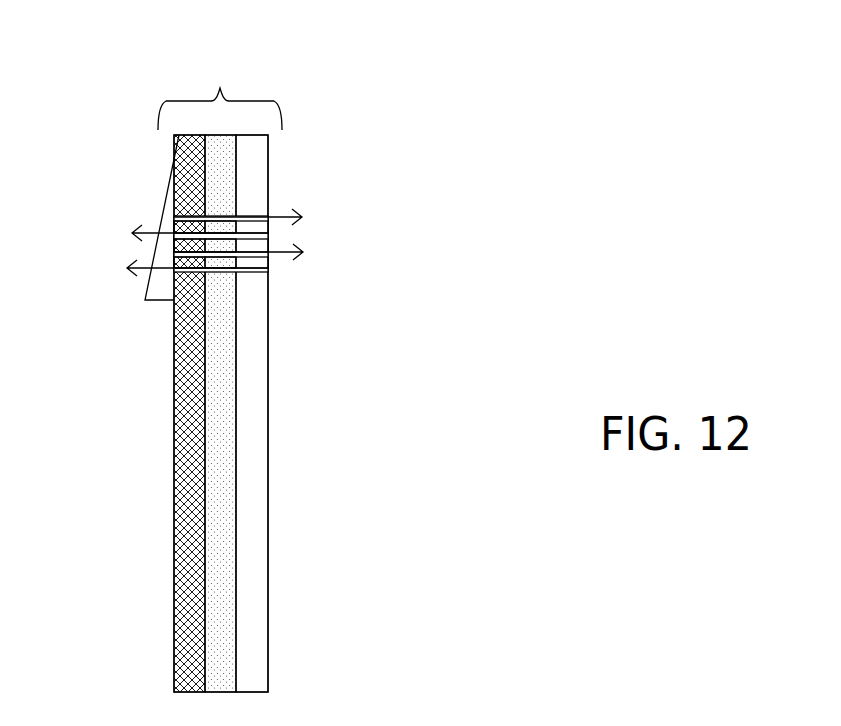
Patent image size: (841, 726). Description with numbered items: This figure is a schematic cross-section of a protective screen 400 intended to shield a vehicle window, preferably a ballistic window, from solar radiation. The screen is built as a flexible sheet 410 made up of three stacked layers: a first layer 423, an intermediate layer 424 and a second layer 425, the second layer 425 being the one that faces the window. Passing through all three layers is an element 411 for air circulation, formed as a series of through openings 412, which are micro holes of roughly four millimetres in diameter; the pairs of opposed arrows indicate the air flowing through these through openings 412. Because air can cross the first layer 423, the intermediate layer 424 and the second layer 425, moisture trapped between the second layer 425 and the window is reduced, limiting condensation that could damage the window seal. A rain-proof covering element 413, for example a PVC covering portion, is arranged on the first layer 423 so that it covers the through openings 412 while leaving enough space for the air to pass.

The protective screen 400 is at (355, 133).
The flexible sheet 410 is at (220, 88).
The element for air circulation 411 is at (350, 257).
The through openings 412 is at (164, 215).
The rain-proof covering element 413 is at (147, 299).
The first layer 423 is at (174, 453).
The intermediate layer 424 is at (222, 503).
The second layer 425 is at (268, 553).